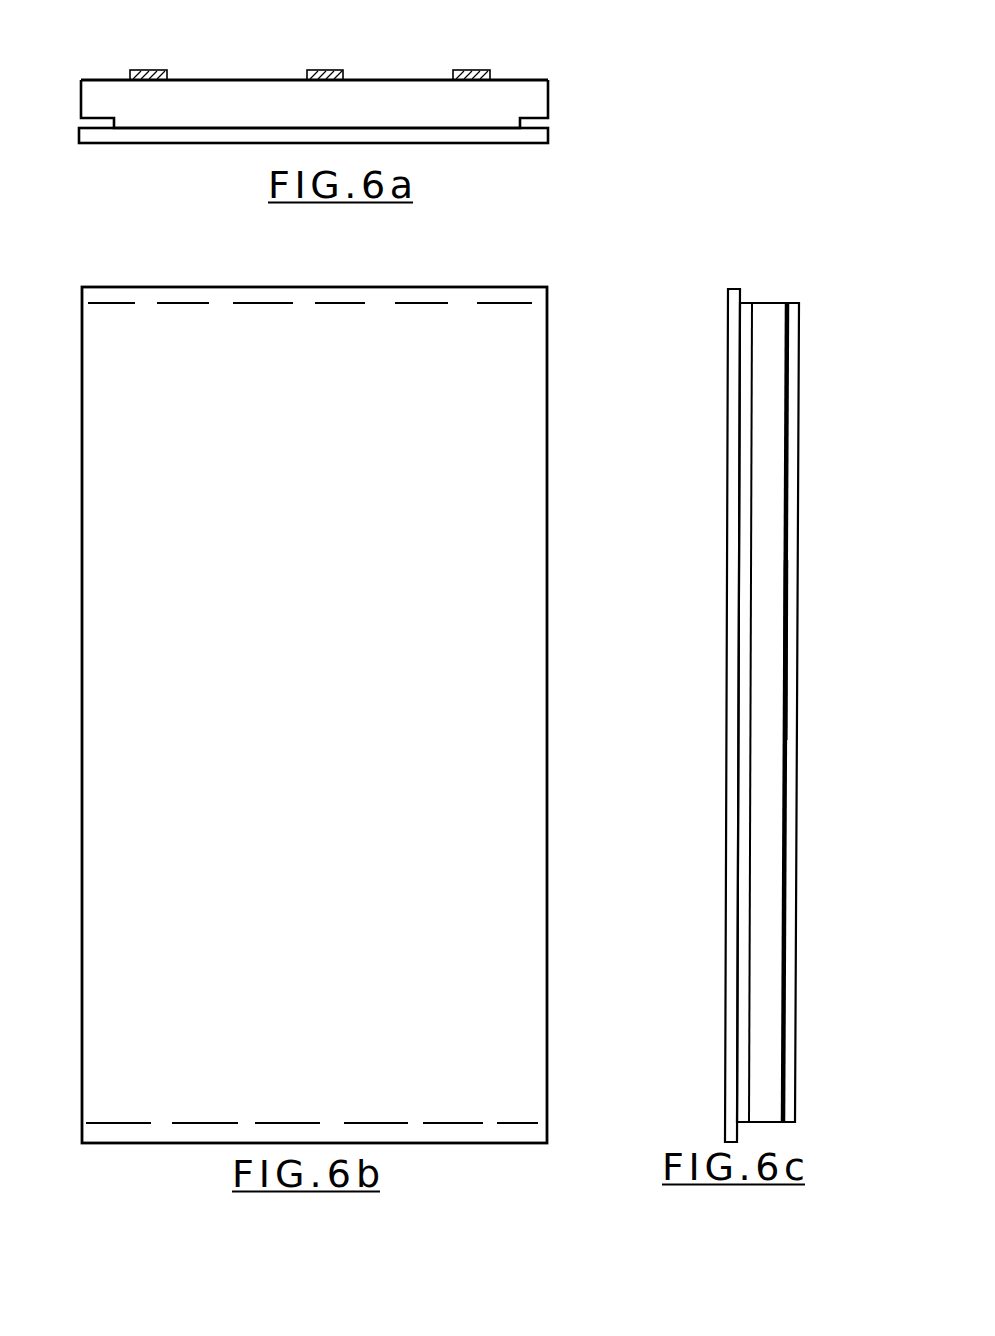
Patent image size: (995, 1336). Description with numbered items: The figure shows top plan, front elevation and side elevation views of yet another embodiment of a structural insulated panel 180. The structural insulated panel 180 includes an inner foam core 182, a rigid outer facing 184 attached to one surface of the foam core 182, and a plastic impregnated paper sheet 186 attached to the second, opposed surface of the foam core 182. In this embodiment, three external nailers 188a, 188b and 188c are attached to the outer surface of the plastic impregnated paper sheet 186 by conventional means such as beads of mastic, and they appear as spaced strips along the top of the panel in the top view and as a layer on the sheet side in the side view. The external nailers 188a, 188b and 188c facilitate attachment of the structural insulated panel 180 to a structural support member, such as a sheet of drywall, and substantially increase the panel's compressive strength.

In FIG. 6a, the structural insulated panel 180 is at (566, 111).
In FIG. 6b, the structural insulated panel 180 is at (64, 697).
In FIG. 6c, the structural insulated panel 180 is at (709, 693).
In FIG. 6a, the inner foam core 182 is at (388, 114).
In FIG. 6c, the inner foam core 182 is at (770, 310).
In FIG. 6a, the rigid outer facing 184 is at (492, 133).
In FIG. 6b, the rigid outer facing 184 is at (310, 684).
In FIG. 6c, the rigid outer facing 184 is at (733, 320).
In FIG. 6a, the plastic impregnated paper sheet 186 is at (242, 79).
In FIG. 6c, the plastic impregnated paper sheet 186 is at (789, 302).
In FIG. 6a, the external nailer 188a is at (138, 69).
In FIG. 6a, the external nailer 188b is at (329, 69).
In FIG. 6a, the external nailer 188c is at (471, 69).
In FIG. 6c, the external nailer 188c is at (791, 648).